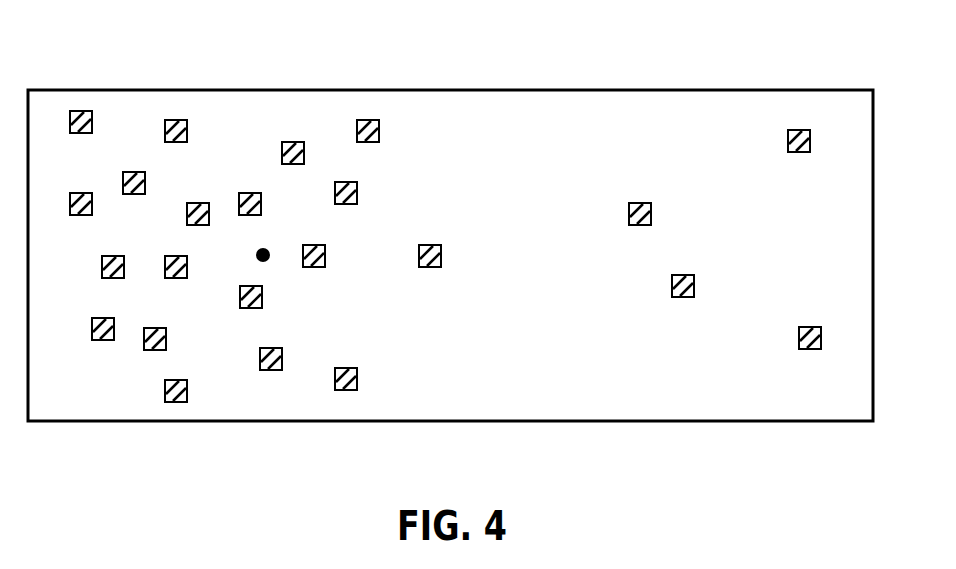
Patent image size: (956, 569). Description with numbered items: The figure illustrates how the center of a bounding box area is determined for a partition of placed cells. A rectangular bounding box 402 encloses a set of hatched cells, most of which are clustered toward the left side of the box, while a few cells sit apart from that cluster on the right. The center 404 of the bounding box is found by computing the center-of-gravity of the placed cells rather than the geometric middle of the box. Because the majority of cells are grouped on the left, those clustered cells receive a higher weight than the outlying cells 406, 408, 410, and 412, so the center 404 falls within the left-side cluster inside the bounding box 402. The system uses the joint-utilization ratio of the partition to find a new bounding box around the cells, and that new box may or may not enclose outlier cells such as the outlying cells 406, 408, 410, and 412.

The bounding box 402 is at (28, 90).
The center 404 is at (263, 262).
The outlying cell 406 is at (642, 230).
The outlying cell 408 is at (682, 302).
The outlying cell 410 is at (798, 156).
The outlying cell 412 is at (810, 354).